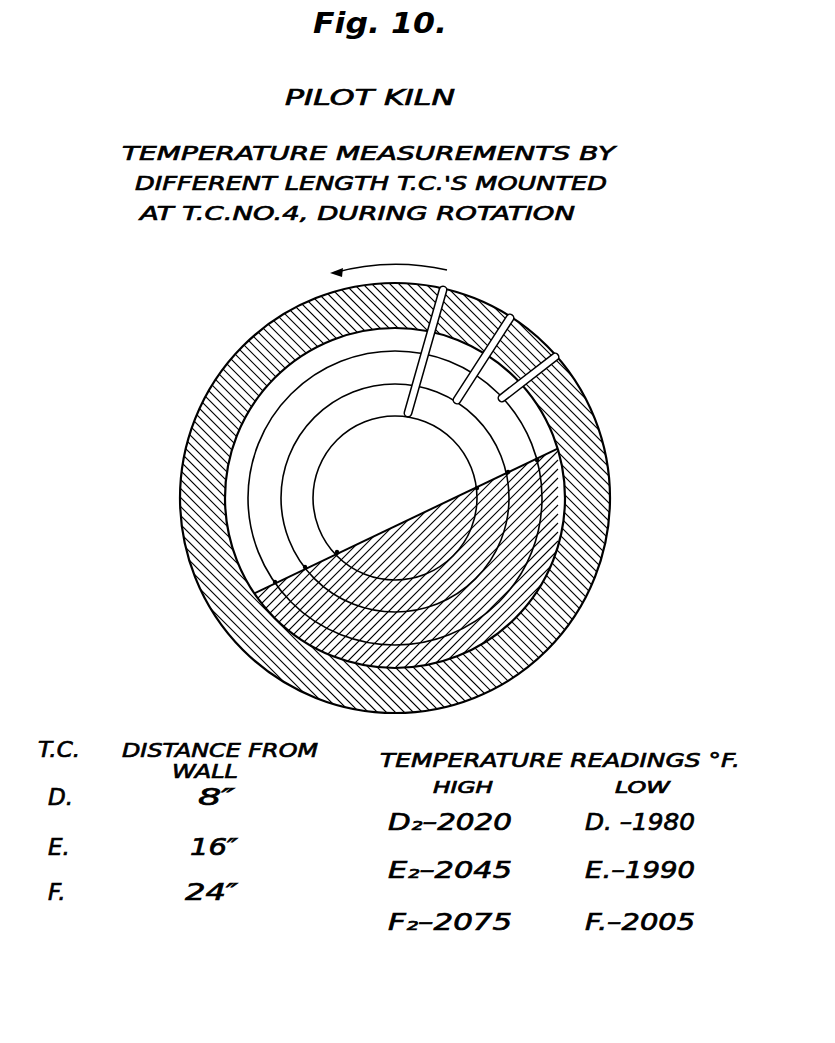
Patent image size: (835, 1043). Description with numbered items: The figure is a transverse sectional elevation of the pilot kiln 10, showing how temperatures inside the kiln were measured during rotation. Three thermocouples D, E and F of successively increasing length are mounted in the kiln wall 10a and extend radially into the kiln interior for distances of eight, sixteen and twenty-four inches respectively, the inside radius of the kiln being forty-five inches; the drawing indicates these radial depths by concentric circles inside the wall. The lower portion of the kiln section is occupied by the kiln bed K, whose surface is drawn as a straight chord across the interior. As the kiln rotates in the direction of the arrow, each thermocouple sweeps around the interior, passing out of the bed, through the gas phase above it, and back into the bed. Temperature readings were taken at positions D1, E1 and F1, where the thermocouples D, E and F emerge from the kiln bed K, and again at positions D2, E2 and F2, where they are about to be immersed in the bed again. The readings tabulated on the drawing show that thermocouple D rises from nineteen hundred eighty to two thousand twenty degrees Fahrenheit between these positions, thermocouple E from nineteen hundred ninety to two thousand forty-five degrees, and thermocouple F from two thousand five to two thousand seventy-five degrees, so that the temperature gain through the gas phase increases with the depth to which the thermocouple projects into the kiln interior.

The kiln 10 is at (193, 452).
The kiln wall 10a is at (545, 433).
The thermocouple D is at (558, 355).
The thermocouple E is at (514, 316).
The thermocouple F is at (447, 286).
The kiln bed K is at (402, 518).
The position D-1 D1 is at (535, 460).
The position E-1 E1 is at (506, 472).
The position F-1 F1 is at (475, 488).
The position D-2 D2 is at (276, 580).
The position E-2 E2 is at (305, 565).
The position F-2 F2 is at (337, 550).